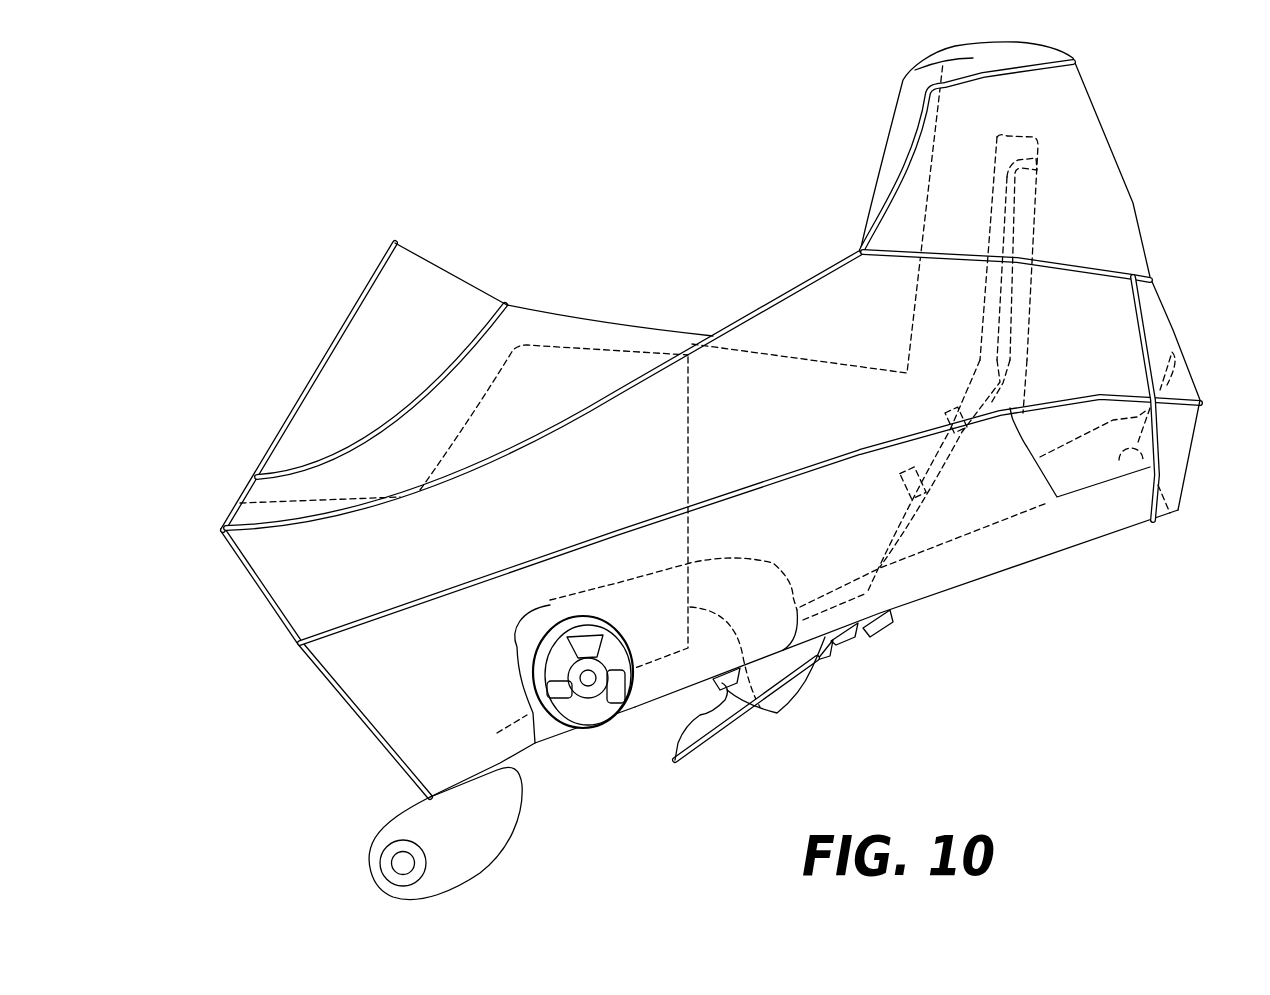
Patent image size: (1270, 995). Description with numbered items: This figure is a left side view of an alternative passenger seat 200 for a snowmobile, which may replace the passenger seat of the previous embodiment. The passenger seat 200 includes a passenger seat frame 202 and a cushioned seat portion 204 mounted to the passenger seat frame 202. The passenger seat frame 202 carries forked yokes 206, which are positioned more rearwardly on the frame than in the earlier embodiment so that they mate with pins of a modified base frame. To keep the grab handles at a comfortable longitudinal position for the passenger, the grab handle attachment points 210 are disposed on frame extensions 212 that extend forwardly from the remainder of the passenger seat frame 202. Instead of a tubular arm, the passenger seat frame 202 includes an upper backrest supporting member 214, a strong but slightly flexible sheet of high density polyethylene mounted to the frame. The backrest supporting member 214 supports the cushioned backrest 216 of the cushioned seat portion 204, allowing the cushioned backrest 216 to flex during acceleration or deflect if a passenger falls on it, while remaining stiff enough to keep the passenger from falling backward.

The passenger seat 200 is at (580, 206).
The passenger seat frame 202 is at (937, 483).
The cushioned seat portion 204 is at (596, 322).
The forked yokes 206 is at (673, 740).
The grab handle attachment points 210 is at (588, 727).
The frame extensions 212 is at (778, 717).
The backrest supporting member 214 is at (1027, 290).
The cushioned backrest 216 is at (1133, 200).